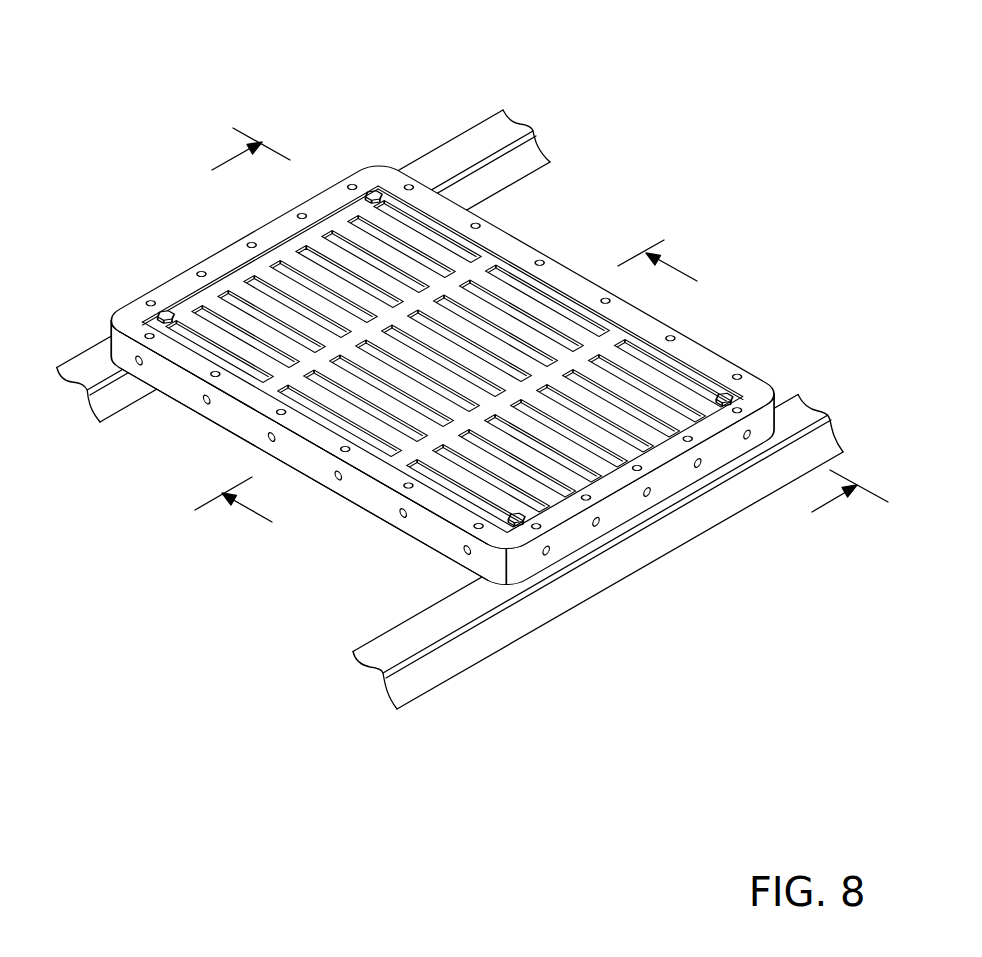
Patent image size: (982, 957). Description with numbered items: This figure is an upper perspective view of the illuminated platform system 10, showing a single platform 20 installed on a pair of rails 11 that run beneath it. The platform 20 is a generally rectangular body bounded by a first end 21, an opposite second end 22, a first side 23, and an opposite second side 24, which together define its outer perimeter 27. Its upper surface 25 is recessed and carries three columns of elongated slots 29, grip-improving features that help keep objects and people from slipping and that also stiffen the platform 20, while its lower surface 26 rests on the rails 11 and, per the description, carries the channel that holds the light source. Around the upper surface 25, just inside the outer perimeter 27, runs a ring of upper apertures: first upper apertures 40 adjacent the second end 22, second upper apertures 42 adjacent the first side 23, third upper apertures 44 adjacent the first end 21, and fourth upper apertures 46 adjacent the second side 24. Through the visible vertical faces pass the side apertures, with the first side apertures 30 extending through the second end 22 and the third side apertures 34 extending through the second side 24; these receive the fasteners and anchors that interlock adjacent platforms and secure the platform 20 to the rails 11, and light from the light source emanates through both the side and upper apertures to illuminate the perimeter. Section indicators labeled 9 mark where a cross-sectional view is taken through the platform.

The section line 9- 9 is at (459, 395).
The illuminated platform system 10 is at (526, 336).
The rails 11 is at (480, 117).
The platform 20 is at (373, 163).
The first end 21 is at (472, 285).
The second end 22 is at (422, 527).
The first side 23 is at (357, 170).
The second side 24 is at (647, 496).
The upper surface 25 is at (393, 177).
The lower surface 26 is at (426, 545).
The outer perimeter 27 is at (232, 418).
The slots 29 is at (660, 388).
The first side apertures 30 is at (403, 516).
The third side apertures 34 is at (598, 526).
The first upper apertures 40 is at (165, 326).
The second upper apertures 42 is at (152, 302).
The third upper apertures 44 is at (687, 441).
The fourth upper apertures 46 is at (607, 297).